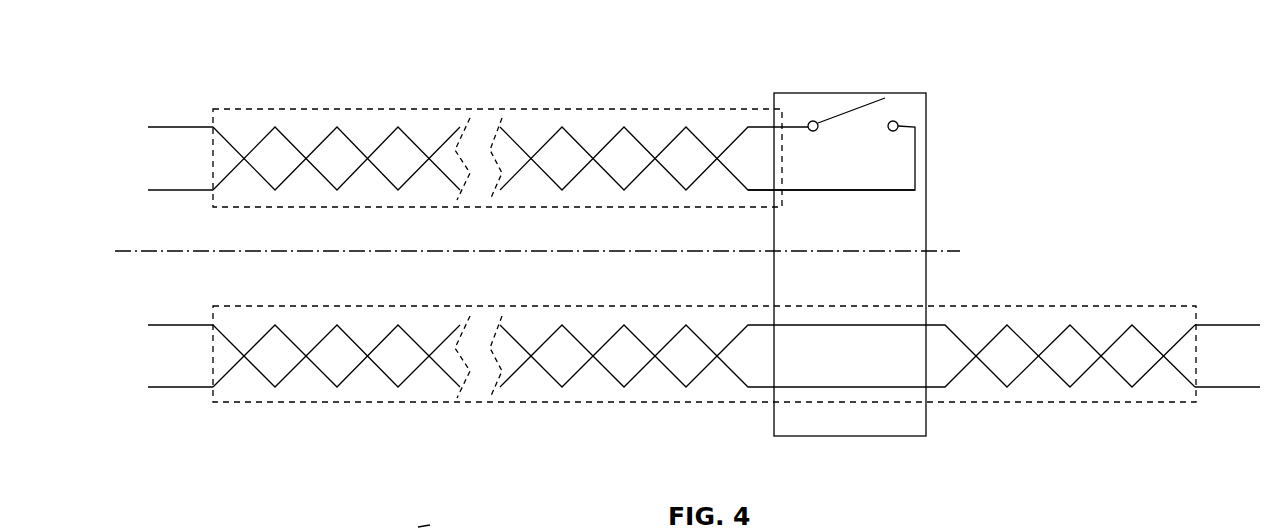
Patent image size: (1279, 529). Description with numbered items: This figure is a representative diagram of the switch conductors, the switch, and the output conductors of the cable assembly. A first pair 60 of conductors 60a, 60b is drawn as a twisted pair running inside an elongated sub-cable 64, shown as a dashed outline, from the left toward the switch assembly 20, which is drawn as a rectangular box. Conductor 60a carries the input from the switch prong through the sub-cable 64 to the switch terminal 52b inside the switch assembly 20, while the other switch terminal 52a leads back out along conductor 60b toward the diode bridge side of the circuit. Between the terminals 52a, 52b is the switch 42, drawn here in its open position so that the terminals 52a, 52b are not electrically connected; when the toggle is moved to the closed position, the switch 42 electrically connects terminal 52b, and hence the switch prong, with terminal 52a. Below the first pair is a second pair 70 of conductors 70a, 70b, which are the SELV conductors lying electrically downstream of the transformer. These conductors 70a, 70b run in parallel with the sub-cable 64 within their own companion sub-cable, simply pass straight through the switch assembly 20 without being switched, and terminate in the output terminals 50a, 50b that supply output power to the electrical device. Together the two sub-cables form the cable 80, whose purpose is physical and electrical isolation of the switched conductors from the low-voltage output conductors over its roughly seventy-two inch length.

The switch assembly 20 is at (864, 458).
The switch 42 is at (848, 108).
The output terminal 50a is at (1213, 389).
The output terminal 50b is at (1213, 322).
The switch terminal 52a is at (893, 120).
The switch terminal 52b is at (812, 120).
The first pair of conductors 60 is at (530, 87).
The conductor 60a is at (178, 126).
The conductor 60b is at (190, 192).
The sub-cable 64 is at (409, 109).
The second pair of conductors 70 is at (611, 421).
The conductor 70a is at (176, 324).
The conductor 70b is at (188, 389).
The cable 80 is at (438, 524).